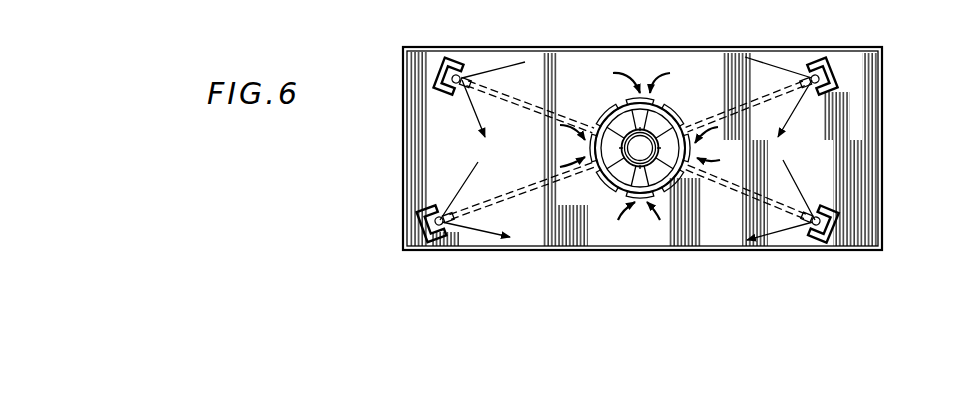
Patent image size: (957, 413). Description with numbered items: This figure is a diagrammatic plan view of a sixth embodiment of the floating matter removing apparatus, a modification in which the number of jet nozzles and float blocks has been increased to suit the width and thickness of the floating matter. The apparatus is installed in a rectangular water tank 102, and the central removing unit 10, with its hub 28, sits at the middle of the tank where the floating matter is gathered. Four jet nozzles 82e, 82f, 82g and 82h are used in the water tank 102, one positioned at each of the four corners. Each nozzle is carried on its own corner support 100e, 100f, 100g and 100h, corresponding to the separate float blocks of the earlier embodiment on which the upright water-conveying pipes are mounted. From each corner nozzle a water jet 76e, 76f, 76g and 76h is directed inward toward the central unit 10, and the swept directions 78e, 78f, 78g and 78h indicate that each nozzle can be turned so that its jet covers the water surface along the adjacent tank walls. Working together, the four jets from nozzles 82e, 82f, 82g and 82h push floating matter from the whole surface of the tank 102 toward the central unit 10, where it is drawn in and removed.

The tire/wheel assembly 10 is at (696, 101).
The wheel hub 28 is at (622, 118).
The water tank 102 is at (883, 67).
The mounting bracket 100h is at (450, 58).
The mounting bracket 100e is at (832, 62).
The mounting bracket 100g is at (426, 242).
The mounting bracket 100f is at (832, 242).
The jet nozzle 82h is at (462, 73).
The jet nozzle 82e is at (815, 76).
The jet nozzle 82g is at (442, 224).
The jet nozzle 82f is at (818, 213).
The scan direction arrows 78h is at (472, 83).
The scan direction arrows 78e is at (818, 85).
The scan direction arrows 78g is at (450, 216).
The scan direction arrows 78f is at (812, 228).
The light beam 76h is at (517, 103).
The light beam 76e is at (733, 110).
The light beam 76g is at (528, 190).
The light beam 76f is at (742, 190).